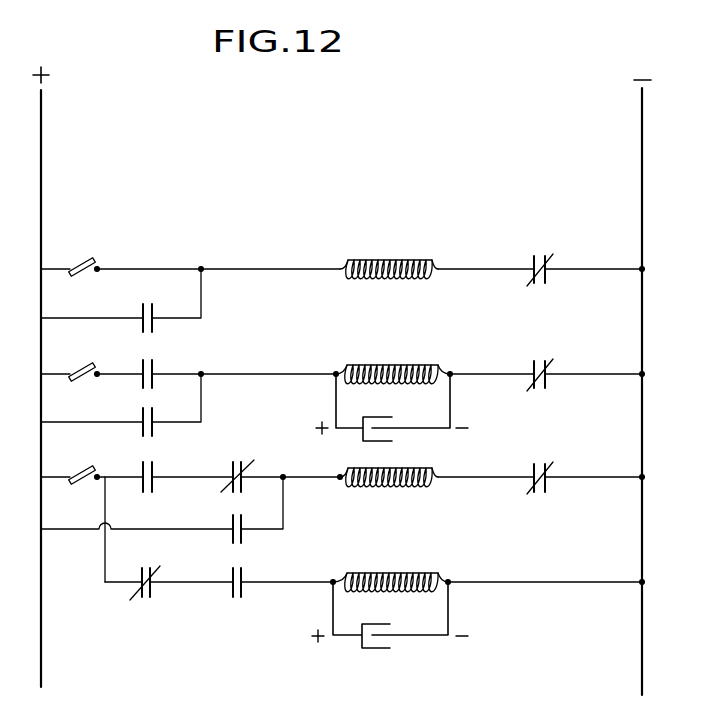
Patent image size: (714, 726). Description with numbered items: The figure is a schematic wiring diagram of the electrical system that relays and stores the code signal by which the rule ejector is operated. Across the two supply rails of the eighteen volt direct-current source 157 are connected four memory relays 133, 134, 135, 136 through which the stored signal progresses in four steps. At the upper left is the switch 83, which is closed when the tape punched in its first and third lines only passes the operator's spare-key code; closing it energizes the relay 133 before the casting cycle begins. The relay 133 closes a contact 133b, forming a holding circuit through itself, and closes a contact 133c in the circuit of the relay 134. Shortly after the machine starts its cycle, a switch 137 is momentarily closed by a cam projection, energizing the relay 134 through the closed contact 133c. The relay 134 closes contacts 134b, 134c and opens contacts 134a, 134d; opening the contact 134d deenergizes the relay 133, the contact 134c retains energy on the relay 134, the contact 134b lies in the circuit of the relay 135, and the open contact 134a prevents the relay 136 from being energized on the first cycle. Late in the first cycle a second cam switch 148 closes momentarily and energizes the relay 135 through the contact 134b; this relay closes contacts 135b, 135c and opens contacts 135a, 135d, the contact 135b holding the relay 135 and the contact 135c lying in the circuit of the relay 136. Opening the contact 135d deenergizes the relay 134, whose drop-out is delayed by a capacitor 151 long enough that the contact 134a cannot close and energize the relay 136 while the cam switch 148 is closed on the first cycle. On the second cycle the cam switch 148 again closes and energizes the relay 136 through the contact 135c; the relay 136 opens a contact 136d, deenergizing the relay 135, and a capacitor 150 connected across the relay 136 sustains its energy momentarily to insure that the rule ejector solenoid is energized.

The D.C. source 157 is at (41, 147).
The switch 83 is at (101, 266).
The switch 137 is at (113, 338).
The cam switch 148 is at (106, 438).
The relay 133 is at (438, 257).
The relay 134 is at (428, 362).
The relay 135 is at (438, 470).
The relay 136 is at (447, 573).
The contact 133b is at (148, 304).
The contact 133c is at (154, 360).
The contact 134a is at (172, 558).
The contact 134b is at (153, 462).
The contact 134c is at (147, 408).
The contact 134d is at (563, 243).
The contact 135a is at (243, 460).
The contact 135b is at (238, 514).
The contact 135c is at (245, 568).
The contact 135d is at (548, 361).
The contact 136d is at (548, 464).
The capacitor 150 is at (394, 650).
The capacitor 151 is at (394, 437).